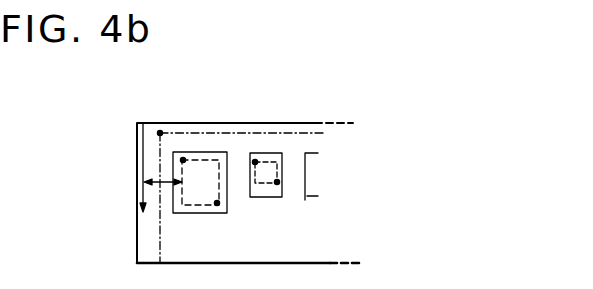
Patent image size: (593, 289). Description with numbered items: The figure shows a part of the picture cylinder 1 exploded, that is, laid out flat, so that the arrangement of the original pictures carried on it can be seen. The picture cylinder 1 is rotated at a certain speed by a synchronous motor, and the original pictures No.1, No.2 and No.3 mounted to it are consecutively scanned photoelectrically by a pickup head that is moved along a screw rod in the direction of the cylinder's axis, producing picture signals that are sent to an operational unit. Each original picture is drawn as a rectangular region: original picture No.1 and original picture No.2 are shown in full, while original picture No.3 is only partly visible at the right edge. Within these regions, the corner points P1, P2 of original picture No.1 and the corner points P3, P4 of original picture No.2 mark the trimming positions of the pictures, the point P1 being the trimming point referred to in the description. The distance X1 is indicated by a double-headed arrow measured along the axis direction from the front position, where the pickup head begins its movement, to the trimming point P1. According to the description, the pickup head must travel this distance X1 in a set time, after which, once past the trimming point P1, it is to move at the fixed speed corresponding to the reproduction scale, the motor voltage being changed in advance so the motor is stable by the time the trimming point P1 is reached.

The picture cylinder 1 is at (250, 123).
The trimming point P1 is at (183, 160).
The second corner point of chip No.1 P2 is at (217, 203).
The first corner point of chip No.2 P3 is at (255, 162).
The second corner point of chip No.2 P4 is at (277, 182).
The distance x1 X1 is at (153, 183).
The original picture No. 1 No.1 is at (195, 214).
The original picture No. 2 No.2 is at (267, 194).
The original picture No. 3 No.3 is at (311, 192).